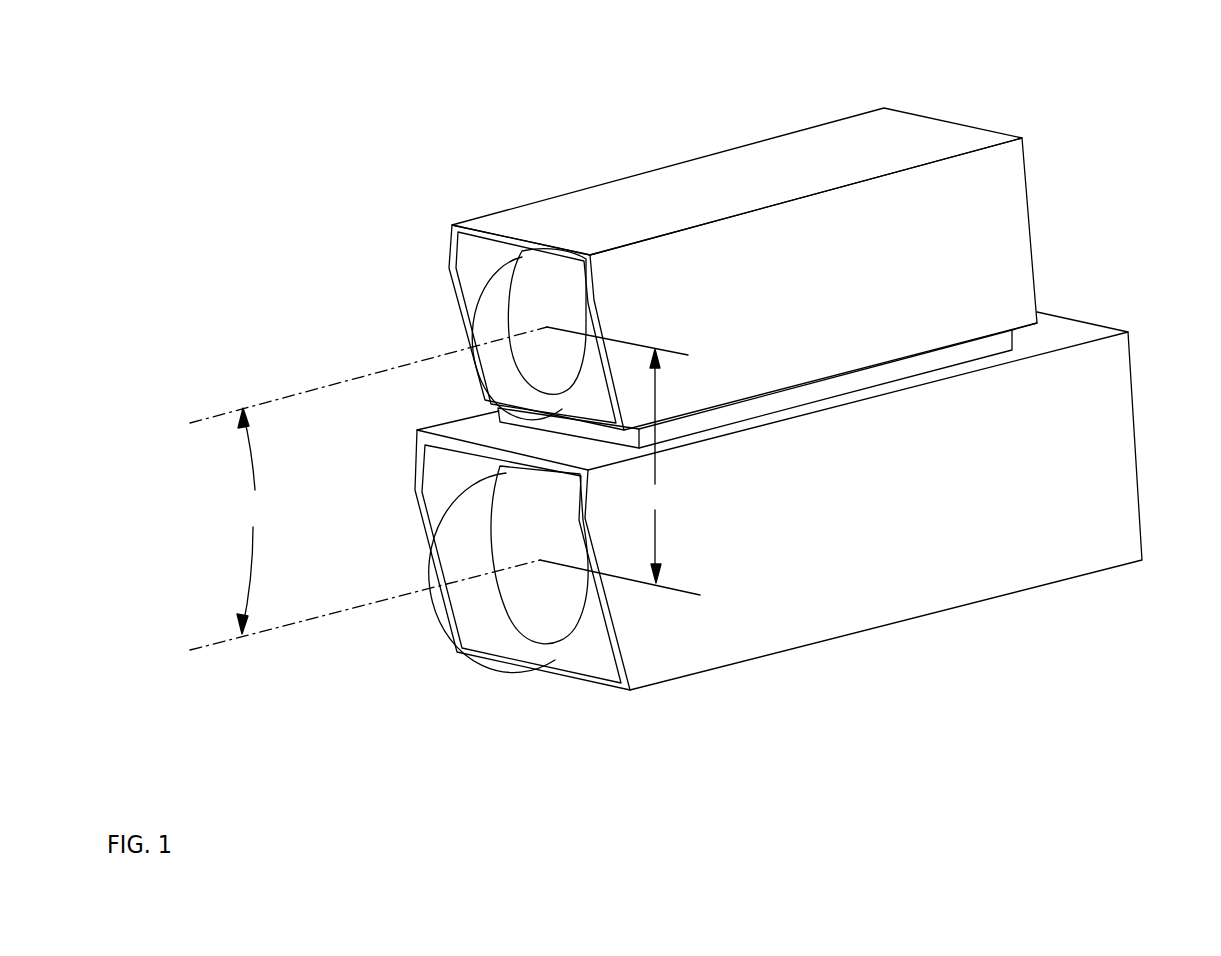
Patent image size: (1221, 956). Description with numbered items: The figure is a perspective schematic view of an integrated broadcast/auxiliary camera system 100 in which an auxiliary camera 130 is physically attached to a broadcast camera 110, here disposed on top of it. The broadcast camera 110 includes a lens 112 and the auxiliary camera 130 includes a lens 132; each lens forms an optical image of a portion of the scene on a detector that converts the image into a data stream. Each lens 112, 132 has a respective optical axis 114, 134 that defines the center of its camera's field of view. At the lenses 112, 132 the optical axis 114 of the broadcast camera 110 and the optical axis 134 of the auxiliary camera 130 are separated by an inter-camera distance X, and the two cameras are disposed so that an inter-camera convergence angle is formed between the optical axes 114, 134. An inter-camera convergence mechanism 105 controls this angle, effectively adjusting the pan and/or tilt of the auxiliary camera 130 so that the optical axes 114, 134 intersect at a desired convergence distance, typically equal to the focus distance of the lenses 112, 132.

The integrated broadcast/auxiliary camera system 100 is at (231, 60).
The inter-camera convergence mechanism 105 is at (1012, 338).
The broadcast camera 110 is at (423, 522).
The lens 112 is at (503, 613).
The optical axis 114 is at (412, 592).
The auxiliary camera 130 is at (485, 215).
The lens 132 is at (510, 303).
The optical axis 134 is at (395, 362).